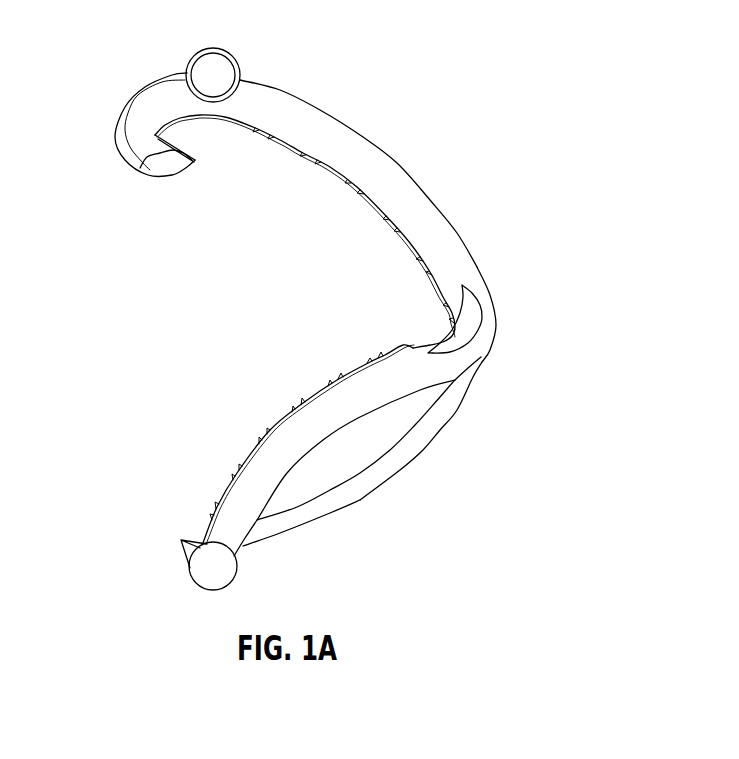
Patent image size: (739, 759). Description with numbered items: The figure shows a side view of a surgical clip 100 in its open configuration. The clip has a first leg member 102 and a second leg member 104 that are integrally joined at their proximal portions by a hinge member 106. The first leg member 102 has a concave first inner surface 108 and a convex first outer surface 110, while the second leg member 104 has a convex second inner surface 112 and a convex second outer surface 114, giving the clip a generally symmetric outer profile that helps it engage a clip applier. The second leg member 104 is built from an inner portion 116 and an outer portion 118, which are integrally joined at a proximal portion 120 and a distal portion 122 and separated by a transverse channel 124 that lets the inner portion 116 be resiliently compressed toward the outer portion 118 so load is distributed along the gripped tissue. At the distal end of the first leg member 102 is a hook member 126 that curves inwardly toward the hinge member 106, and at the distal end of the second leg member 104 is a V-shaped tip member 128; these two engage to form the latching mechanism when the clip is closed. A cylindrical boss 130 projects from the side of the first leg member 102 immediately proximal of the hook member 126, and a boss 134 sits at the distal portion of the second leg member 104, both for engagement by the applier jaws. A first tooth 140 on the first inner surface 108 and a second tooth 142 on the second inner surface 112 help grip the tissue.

The surgical clip 100 is at (455, 53).
The first leg member 102 is at (497, 138).
The second leg member 104 is at (497, 463).
The hinge member 106 is at (480, 283).
The first inner surface 108 is at (340, 173).
The first outer surface 110 is at (321, 109).
The second inner surface 112 is at (300, 403).
The second outer surface 114 is at (457, 410).
The inner portion 116 is at (237, 493).
The outer portion 118 is at (333, 510).
The proximal portion 120 is at (477, 355).
The distal portion 122 is at (250, 537).
The channel 124 is at (363, 453).
The hook member 126 is at (130, 127).
The tip member 128 is at (163, 579).
The boss 130 is at (217, 63).
The boss 134 is at (217, 573).
The first tooth 140 is at (253, 130).
The second tooth 142 is at (247, 457).